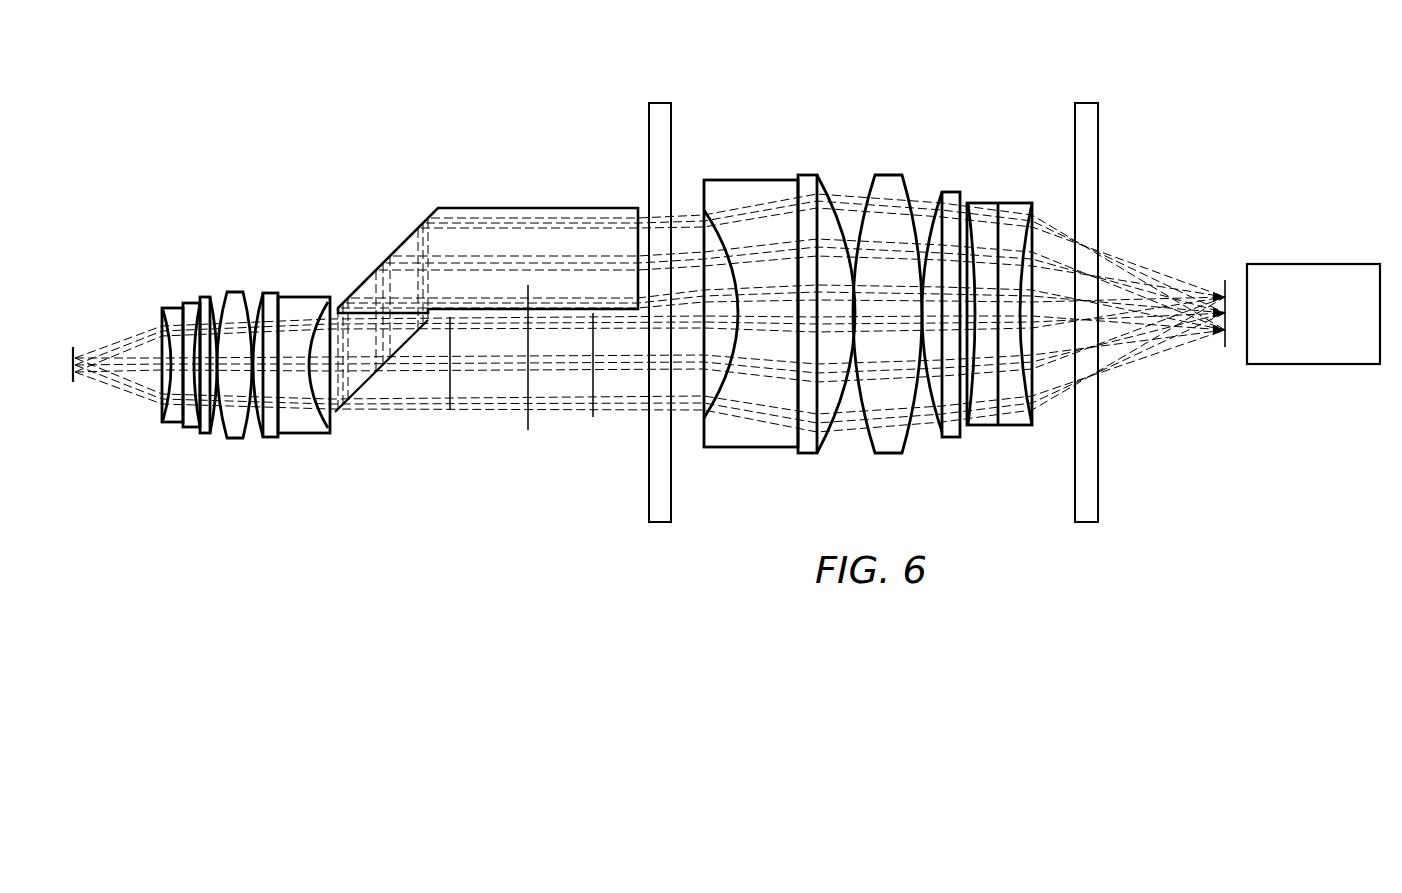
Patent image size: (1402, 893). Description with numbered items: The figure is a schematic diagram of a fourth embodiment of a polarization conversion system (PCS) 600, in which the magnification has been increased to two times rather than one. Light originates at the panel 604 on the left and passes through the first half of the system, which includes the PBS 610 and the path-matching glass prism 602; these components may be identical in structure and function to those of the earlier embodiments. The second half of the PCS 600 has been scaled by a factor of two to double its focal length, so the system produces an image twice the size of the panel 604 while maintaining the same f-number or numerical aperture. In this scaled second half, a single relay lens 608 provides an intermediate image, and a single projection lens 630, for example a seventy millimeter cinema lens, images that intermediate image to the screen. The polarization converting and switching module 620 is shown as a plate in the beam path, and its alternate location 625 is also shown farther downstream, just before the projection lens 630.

The polarization conversion system 600 is at (322, 109).
The path-matching glass prism 602 is at (403, 243).
The panel 604 is at (73, 345).
The relay lens 608 is at (1032, 167).
The PBS 610 is at (368, 388).
The polarization converting and switching module 620 is at (658, 102).
The alternate location 625 is at (1087, 102).
The projection lens 630 is at (1313, 263).